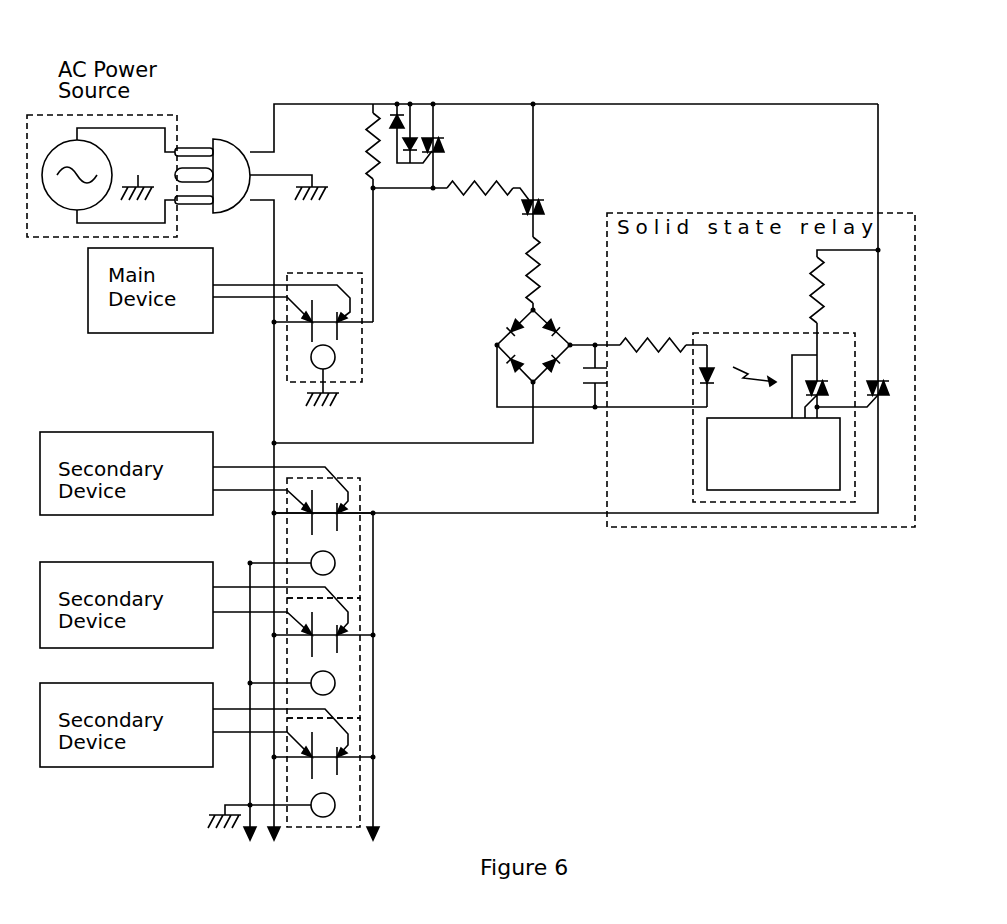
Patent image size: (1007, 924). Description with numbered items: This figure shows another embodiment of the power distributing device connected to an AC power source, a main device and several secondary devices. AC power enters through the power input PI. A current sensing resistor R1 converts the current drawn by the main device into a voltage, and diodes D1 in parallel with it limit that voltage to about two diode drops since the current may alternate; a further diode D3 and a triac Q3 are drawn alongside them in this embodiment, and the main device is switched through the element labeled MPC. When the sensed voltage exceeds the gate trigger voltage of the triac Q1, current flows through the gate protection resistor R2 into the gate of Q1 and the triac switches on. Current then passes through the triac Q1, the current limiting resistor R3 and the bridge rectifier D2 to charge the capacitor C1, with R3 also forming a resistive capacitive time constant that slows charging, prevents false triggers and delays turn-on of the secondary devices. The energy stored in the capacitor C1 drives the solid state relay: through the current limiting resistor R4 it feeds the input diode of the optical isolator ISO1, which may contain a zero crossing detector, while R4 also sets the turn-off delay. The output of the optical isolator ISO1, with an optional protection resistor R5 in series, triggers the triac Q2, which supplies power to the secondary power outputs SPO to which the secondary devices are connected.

The power input PI is at (212, 159).
The current sensing resistor R1 is at (355, 213).
The diodes D1 is at (399, 122).
The diode D3 is at (417, 122).
The triac Q3 is at (451, 146).
The gate protection resistor R2 is at (451, 204).
The triac Q1 is at (551, 170).
The current limiting resistor R3 is at (552, 273).
The bridge rectifier D2 is at (523, 340).
The capacitor C1 is at (577, 376).
The current limiting resistor R4 is at (663, 332).
The protection resistor R5 is at (826, 315).
The optical isolator ISO1 is at (774, 407).
The triac Q2 is at (865, 401).
The main power controller MPC is at (311, 339).
The secondary power outputs SPO is at (321, 653).